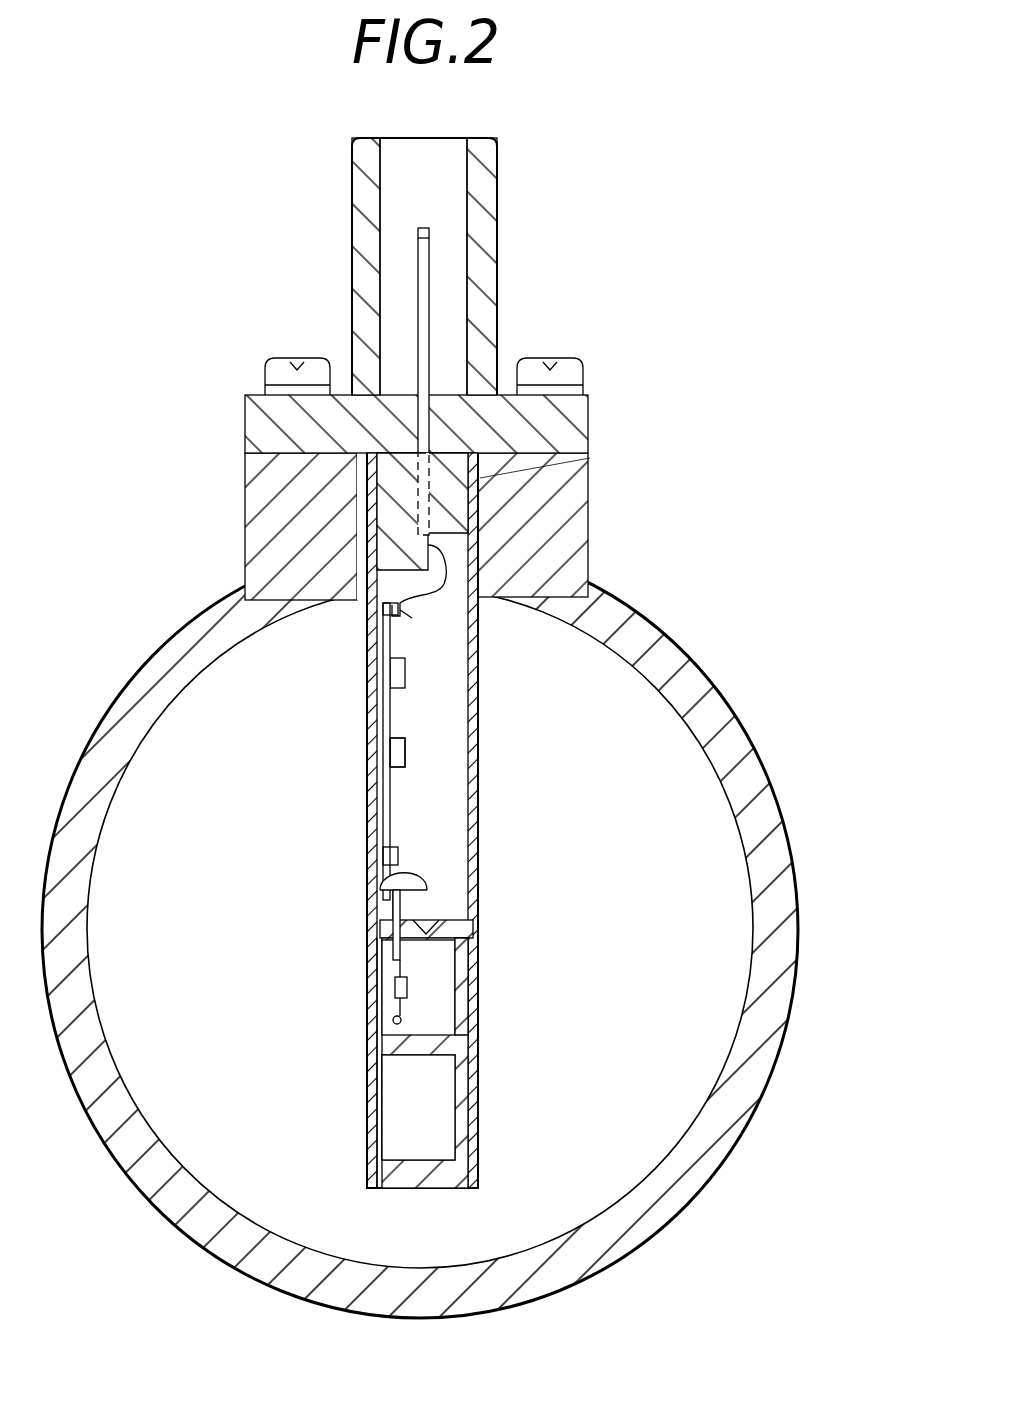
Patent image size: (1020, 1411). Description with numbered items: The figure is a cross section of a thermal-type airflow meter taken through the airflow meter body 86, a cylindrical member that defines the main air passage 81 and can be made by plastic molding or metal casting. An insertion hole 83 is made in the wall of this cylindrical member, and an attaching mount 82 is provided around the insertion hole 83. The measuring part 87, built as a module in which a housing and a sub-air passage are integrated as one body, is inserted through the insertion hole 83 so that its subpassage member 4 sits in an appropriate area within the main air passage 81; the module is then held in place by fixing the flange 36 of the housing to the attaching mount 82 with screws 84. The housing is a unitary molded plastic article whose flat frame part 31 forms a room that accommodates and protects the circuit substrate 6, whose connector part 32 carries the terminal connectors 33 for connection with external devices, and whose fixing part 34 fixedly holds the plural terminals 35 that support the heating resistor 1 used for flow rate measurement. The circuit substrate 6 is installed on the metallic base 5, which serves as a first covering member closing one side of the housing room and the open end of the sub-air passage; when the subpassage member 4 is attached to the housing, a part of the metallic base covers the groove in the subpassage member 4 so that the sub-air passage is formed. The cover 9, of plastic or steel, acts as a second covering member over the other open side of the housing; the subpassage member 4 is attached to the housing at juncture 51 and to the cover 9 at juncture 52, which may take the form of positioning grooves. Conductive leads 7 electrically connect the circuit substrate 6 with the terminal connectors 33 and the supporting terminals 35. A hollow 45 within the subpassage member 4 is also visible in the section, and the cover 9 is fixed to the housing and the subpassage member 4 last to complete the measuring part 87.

The heating resistor 1 is at (393, 995).
The subpassage member 4 is at (472, 1037).
The metallic base 5 is at (370, 768).
The circuit substrate 6 is at (383, 808).
The conductive leads 7 is at (433, 633).
The cover 9 is at (478, 813).
The frame part 31 is at (440, 715).
The connector part 32 is at (470, 246).
The terminal connectors 33 is at (432, 257).
The fixing part 34 is at (385, 900).
The terminals 35 is at (375, 945).
The flange 36 is at (588, 398).
The cavity 45 is at (373, 1118).
The juncture 51 is at (473, 940).
The juncture 52 is at (480, 495).
The main air passage 81 is at (628, 1128).
The attaching mount 82 is at (262, 442).
The insertion hole 83 is at (590, 458).
The screws 84 is at (555, 360).
The airflow meter body 86 is at (705, 708).
The measuring part 87 is at (352, 176).